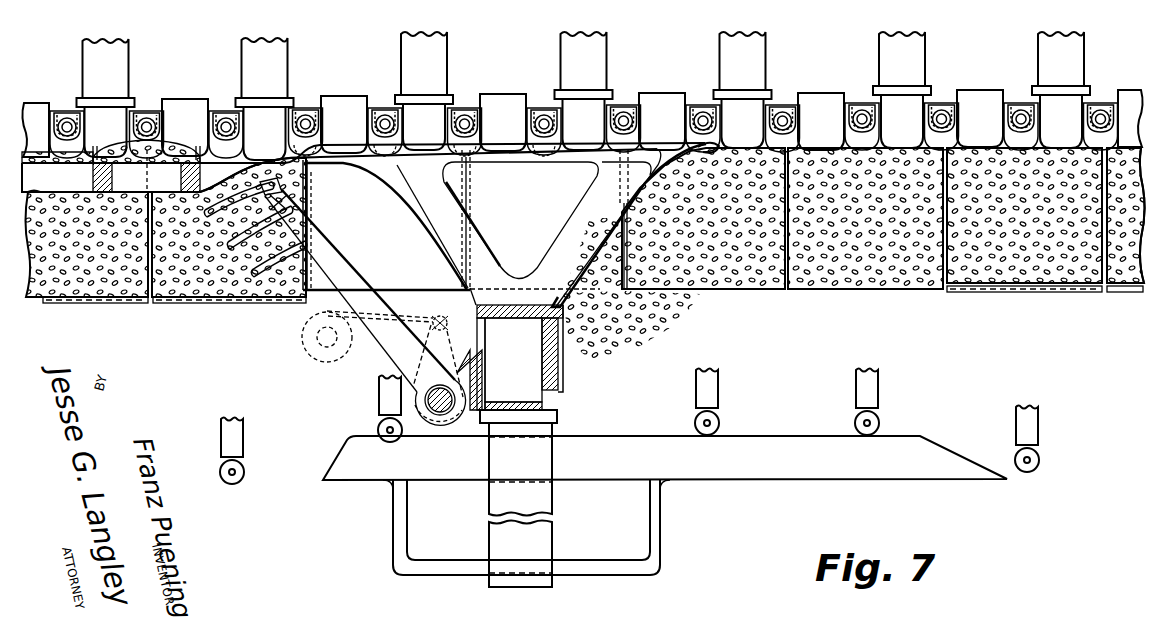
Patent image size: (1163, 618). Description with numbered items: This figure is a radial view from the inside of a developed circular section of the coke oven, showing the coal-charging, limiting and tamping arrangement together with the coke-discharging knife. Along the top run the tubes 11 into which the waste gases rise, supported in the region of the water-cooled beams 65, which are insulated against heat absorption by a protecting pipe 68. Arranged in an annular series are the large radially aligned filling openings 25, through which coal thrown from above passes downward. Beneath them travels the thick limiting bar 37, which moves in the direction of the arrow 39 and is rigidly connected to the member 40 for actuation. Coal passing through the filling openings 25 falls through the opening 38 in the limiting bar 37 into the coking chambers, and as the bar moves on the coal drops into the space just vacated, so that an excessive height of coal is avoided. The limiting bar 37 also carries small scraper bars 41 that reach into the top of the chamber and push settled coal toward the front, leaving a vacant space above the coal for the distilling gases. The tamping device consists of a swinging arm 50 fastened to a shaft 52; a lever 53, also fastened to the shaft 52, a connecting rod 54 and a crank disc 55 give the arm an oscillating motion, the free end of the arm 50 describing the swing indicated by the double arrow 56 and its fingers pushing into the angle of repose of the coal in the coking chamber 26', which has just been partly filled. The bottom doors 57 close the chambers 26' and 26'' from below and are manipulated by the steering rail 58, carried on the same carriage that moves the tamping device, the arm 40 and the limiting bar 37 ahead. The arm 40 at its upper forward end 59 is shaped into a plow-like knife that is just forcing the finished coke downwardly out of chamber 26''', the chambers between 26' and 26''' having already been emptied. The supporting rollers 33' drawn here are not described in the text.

The tube 11 is at (276, 42).
The filling openings 25 is at (224, 130).
The coking chamber 26' is at (229, 250).
The coking chamber 26'' is at (87, 267).
The coking chamber 26''' is at (854, 254).
The supporting roller 33' is at (629, 427).
The limiting bar 37 is at (34, 192).
The opening 38 is at (165, 157).
The arrow 39 is at (568, 193).
The member 40 is at (338, 150).
The scraper bars 41 is at (44, 152).
The swinging arm 50 is at (322, 256).
The shaft 52 is at (440, 413).
The lever 53 is at (451, 314).
The connecting rod 54 is at (292, 222).
The crank disc 55 is at (327, 313).
The double arrow 56 is at (292, 195).
The bottom doors 57 is at (147, 304).
The steering rail 58 is at (947, 458).
The upper forward end 59 is at (690, 143).
The water-cooled beams 65 is at (464, 122).
The protecting pipe 68 is at (384, 112).